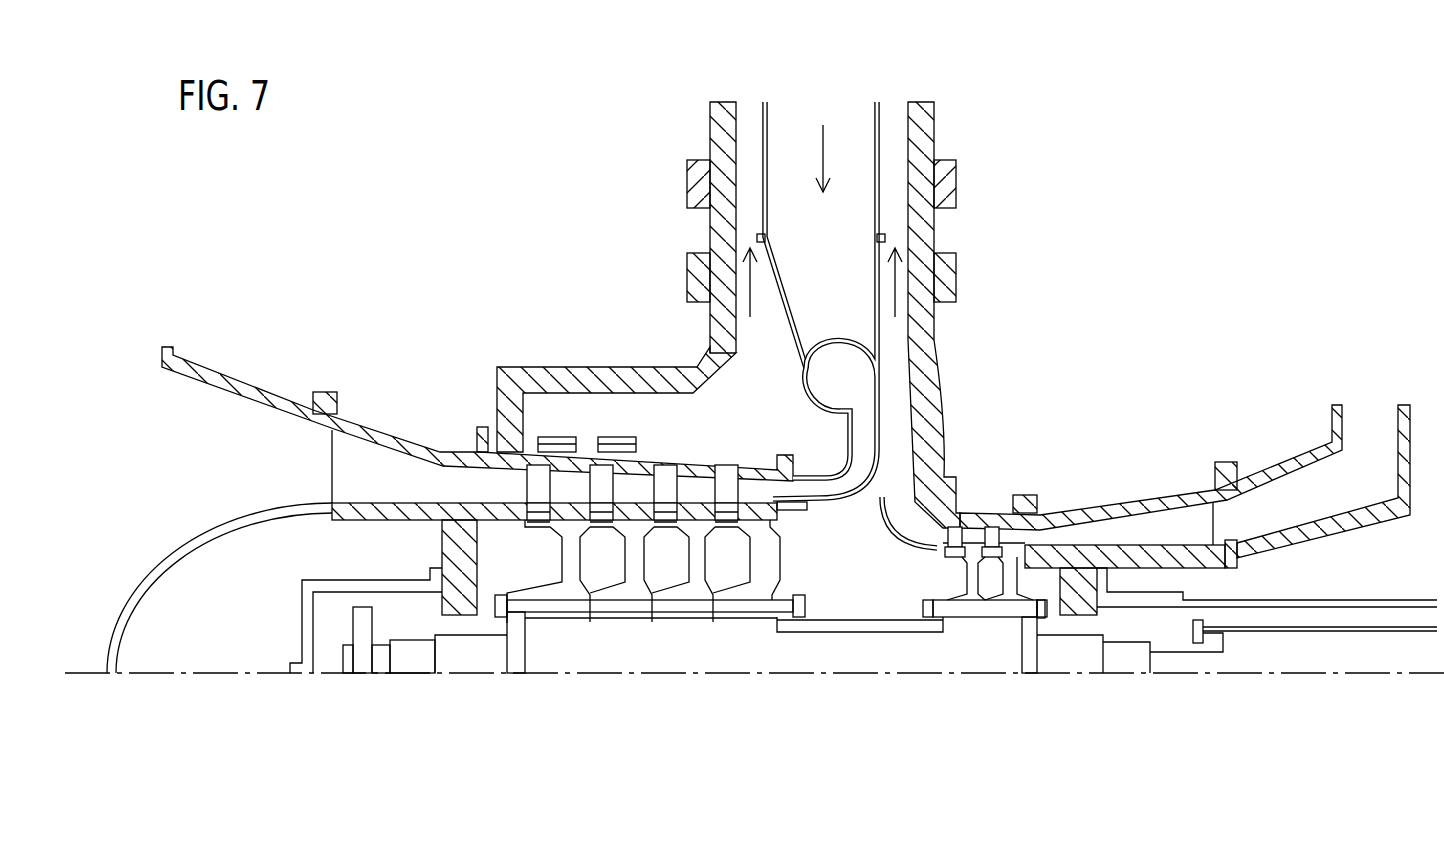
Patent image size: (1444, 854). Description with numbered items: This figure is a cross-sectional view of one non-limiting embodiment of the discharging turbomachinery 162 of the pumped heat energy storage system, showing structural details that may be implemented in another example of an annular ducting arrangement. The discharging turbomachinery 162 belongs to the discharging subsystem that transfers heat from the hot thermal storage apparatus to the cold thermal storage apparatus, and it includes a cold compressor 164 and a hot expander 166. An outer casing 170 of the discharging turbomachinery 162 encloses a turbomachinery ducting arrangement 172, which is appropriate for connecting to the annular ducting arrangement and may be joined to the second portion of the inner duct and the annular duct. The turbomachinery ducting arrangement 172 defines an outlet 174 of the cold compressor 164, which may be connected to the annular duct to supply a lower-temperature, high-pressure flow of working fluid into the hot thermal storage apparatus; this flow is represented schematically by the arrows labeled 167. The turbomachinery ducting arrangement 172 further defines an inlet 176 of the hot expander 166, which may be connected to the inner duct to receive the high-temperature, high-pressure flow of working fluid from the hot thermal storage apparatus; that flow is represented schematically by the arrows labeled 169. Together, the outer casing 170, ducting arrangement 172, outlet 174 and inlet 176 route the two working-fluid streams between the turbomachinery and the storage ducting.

The discharging turbomachinery 162 is at (690, 710).
The cold compressor 164 is at (1163, 447).
The hot expander 166 is at (568, 337).
The lower-temperature, high-pressure flow of working fluid 167 is at (742, 275).
The high-temperature, high-pressure flow of working fluid 169 is at (826, 157).
The outer casing 170 is at (720, 323).
The turbomachinery ducting arrangement 172 is at (650, 205).
The outlet 174 is at (903, 538).
The inlet 176 is at (770, 118).